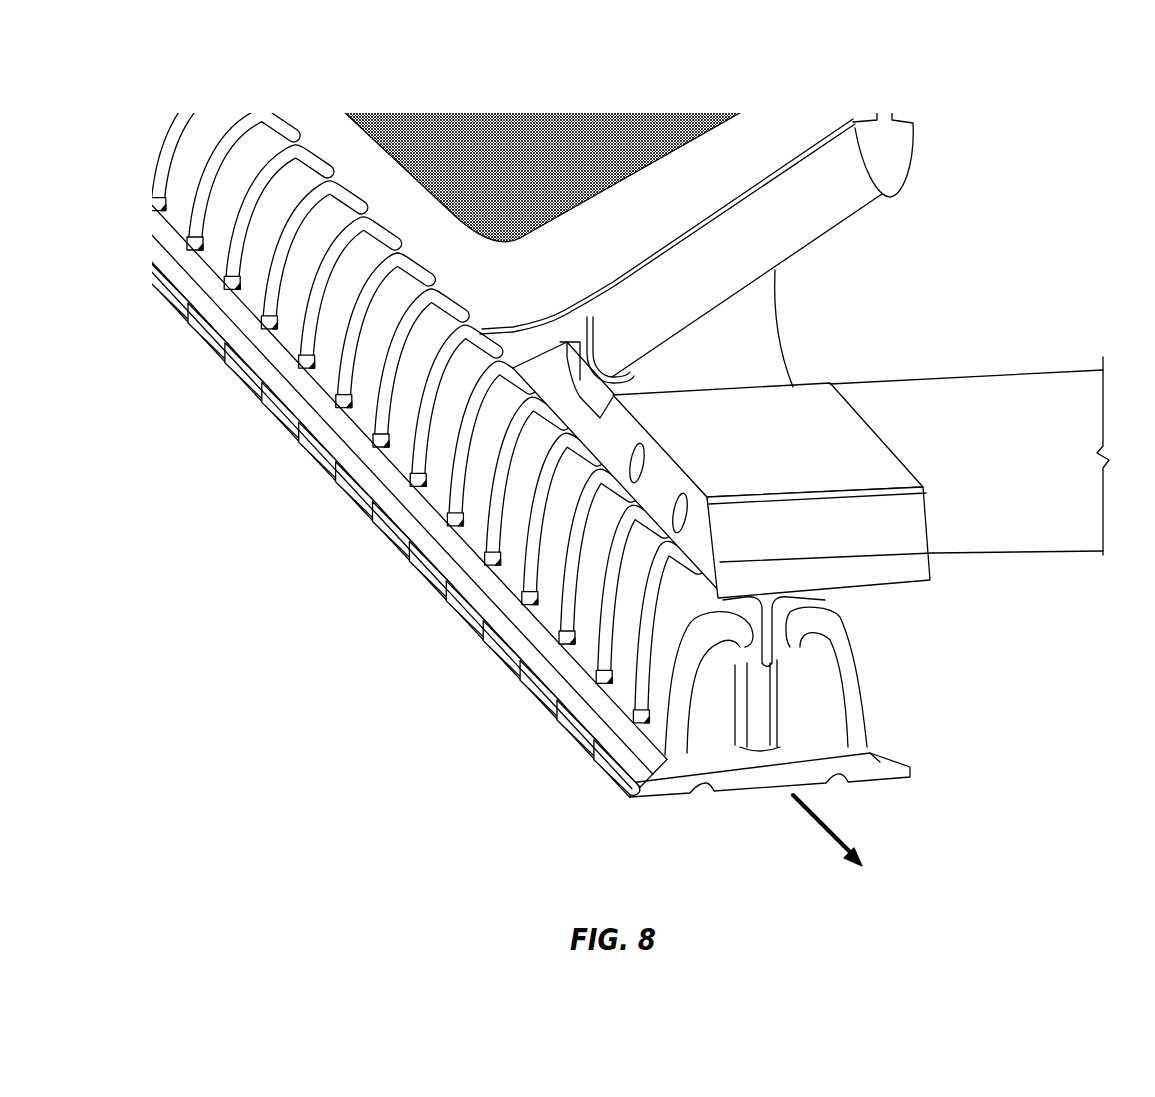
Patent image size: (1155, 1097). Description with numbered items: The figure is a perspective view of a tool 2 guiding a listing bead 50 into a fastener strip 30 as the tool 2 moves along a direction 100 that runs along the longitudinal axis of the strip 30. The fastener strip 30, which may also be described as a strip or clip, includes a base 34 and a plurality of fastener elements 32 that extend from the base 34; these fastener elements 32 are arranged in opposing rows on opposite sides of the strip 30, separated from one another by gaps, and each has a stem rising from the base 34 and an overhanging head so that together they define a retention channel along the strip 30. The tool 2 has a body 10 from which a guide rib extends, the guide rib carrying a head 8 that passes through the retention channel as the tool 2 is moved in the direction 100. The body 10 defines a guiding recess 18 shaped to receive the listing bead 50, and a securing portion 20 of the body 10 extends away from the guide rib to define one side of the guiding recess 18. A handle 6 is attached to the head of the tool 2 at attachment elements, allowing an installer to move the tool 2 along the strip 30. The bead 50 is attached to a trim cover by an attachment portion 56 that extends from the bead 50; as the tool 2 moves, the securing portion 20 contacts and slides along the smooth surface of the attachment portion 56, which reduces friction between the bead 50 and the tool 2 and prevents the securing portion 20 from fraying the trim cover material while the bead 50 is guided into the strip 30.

The tool 2 is at (811, 447).
The handle 6 is at (1000, 393).
The head 8 is at (760, 717).
The body 10 is at (817, 465).
The guiding recess 18 is at (632, 378).
The securing portion 20 is at (755, 310).
The fastener strip 30 is at (277, 428).
The fastener elements 32 is at (478, 532).
The base 34 is at (747, 752).
The listing bead 50 is at (893, 170).
The attachment portion 56 is at (787, 140).
The direction 100 is at (843, 838).